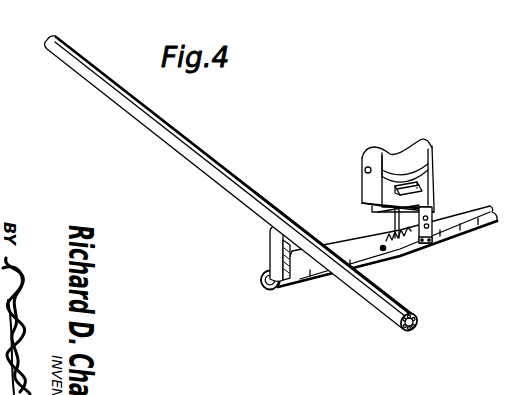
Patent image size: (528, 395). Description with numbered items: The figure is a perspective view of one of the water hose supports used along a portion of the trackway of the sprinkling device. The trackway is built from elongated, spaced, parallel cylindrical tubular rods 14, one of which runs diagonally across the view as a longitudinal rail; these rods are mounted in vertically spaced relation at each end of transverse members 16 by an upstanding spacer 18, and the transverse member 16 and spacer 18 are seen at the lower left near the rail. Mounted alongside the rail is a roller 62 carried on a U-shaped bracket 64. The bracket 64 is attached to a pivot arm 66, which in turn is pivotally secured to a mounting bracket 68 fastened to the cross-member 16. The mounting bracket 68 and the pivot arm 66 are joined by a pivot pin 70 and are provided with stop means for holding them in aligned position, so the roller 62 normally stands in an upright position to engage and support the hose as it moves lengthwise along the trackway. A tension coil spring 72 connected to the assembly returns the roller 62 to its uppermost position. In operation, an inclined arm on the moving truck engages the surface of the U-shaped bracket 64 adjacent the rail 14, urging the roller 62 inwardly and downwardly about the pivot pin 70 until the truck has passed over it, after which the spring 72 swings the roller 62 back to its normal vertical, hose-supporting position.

The tubular rod 14 is at (388, 306).
The transverse member 16 is at (307, 288).
The upstanding spacer 18 is at (276, 257).
The roller 62 is at (397, 153).
The U-shaped bracket 64 is at (430, 188).
The pivot arm 66 is at (431, 204).
The mounting bracket 68 is at (423, 245).
The pivot pin 70 is at (429, 226).
The tension coil spring 72 is at (387, 239).